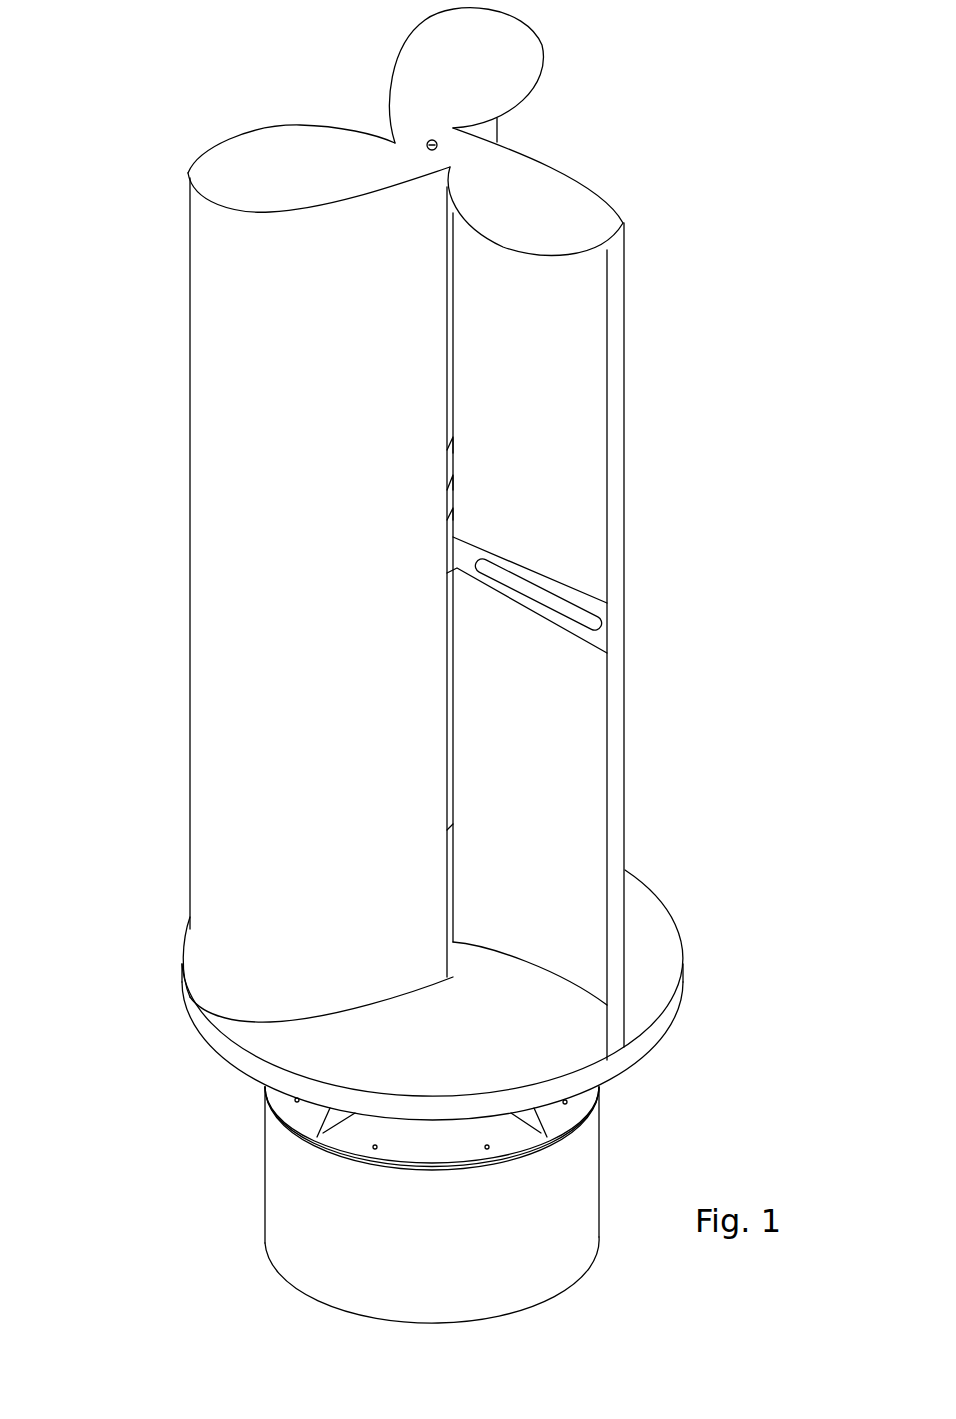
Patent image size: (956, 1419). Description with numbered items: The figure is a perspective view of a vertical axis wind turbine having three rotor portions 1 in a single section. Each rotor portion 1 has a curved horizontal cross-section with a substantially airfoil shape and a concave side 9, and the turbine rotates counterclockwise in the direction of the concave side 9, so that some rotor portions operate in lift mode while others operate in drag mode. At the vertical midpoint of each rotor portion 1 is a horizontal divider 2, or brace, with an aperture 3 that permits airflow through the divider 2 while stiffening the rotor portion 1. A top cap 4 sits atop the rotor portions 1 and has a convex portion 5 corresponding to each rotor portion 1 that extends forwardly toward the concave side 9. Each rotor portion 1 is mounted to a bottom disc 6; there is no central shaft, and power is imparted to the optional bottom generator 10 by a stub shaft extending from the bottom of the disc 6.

The rotor portion 1 is at (415, 578).
The divider 2 is at (598, 639).
The aperture 3 is at (567, 606).
The top cap 4 is at (582, 197).
The convex portion 5 is at (287, 127).
The bottom disc 6 is at (667, 957).
The concave side 9 is at (454, 474).
The bottom generator 10 is at (585, 1168).